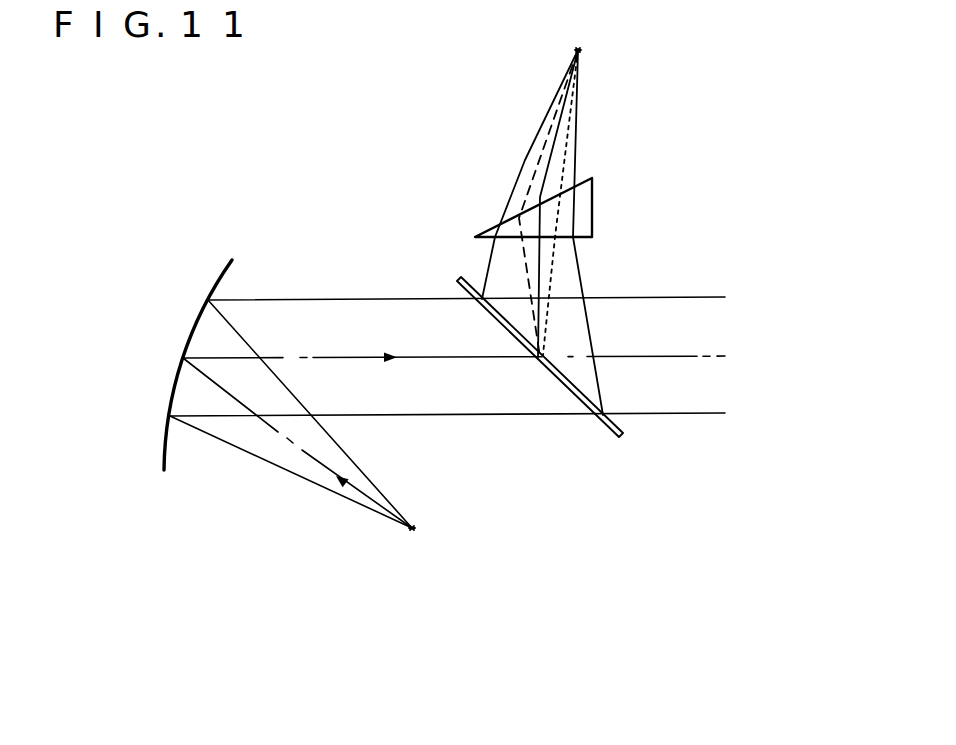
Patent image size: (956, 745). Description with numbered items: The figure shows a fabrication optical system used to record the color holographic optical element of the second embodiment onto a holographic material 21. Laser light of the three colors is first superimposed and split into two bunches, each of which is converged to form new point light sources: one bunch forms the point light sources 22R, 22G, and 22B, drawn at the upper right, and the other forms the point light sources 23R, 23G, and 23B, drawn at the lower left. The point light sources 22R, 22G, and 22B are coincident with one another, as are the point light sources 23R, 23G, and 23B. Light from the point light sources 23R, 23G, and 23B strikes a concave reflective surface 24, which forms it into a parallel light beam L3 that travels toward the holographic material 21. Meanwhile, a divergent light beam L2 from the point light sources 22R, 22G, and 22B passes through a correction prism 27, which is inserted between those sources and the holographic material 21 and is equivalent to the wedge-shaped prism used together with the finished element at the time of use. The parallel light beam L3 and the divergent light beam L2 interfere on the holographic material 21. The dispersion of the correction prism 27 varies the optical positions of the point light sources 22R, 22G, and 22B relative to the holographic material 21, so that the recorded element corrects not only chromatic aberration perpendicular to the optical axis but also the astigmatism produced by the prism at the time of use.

The holographic material 21 is at (607, 427).
The point light source 22R is at (578, 50).
The point light source 22G is at (657, 50).
The point light source 22B is at (685, 50).
The point light source 23R is at (413, 529).
The point light source 23G is at (493, 532).
The point light source 23B is at (521, 532).
The concave reflective surface 24 is at (217, 282).
The correction prism 27 is at (592, 207).
The divergent light beam L2 is at (573, 269).
The parallel light beam L3 is at (358, 313).